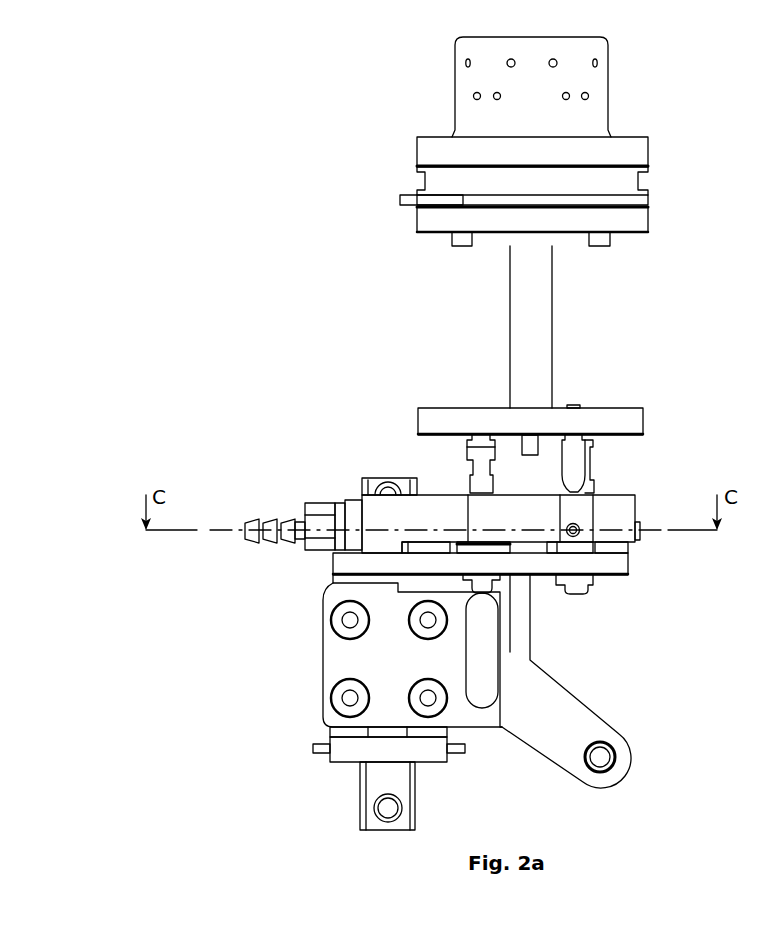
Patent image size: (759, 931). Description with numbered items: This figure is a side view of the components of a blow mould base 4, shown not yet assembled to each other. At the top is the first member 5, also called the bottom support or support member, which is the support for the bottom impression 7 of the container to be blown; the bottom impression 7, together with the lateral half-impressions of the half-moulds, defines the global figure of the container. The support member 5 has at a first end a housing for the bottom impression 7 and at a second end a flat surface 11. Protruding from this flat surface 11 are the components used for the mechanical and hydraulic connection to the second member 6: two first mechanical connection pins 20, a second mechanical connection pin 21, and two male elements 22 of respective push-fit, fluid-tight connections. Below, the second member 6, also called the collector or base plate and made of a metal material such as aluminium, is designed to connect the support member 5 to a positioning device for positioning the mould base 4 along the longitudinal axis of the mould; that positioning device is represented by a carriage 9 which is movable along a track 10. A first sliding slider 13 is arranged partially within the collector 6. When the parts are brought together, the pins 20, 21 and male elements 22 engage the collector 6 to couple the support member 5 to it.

The blow mould base 4 is at (233, 288).
The first member 5 is at (655, 227).
The second member 6 is at (328, 484).
The bottom impression 7 is at (573, 37).
The carriage 9 is at (345, 660).
The track 10 is at (382, 790).
The flat surface 11 is at (623, 437).
The first sliding slider 13 is at (640, 537).
The first mechanical connection pins 20 is at (472, 470).
The second mechanical connection pin 21 is at (577, 467).
The male elements 22 is at (532, 445).